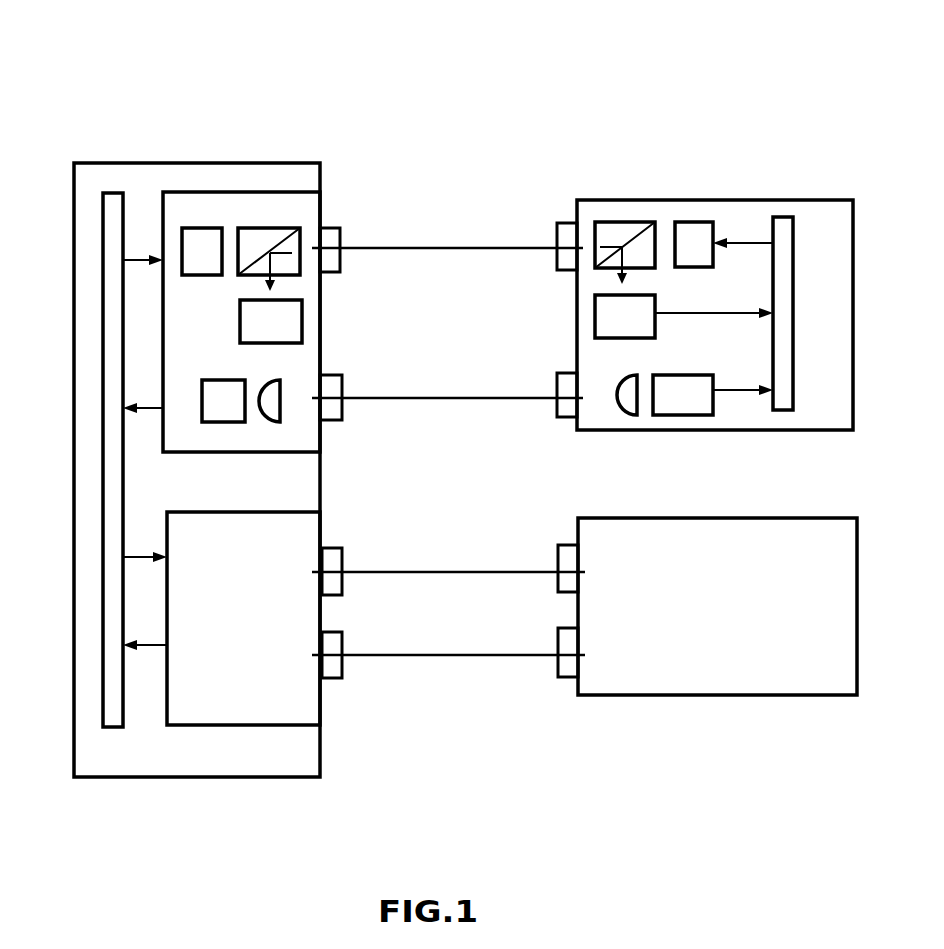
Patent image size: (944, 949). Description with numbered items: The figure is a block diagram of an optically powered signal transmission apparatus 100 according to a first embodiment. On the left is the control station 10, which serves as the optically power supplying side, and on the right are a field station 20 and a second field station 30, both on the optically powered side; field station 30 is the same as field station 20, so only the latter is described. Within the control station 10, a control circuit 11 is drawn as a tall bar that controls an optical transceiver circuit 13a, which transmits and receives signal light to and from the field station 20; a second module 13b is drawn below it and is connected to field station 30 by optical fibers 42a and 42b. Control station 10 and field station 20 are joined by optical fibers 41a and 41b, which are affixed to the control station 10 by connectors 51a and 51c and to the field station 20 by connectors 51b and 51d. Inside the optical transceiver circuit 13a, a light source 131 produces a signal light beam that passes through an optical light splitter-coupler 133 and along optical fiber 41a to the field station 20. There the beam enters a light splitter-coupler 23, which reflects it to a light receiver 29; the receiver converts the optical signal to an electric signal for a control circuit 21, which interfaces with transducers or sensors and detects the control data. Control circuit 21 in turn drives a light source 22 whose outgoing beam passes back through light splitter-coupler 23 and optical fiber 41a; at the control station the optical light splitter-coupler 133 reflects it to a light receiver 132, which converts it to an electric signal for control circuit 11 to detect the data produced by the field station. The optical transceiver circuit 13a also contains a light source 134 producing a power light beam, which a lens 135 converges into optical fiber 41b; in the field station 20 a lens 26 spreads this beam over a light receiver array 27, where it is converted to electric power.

The optically powered signal transmission apparatus 100 is at (498, 72).
The control station 10 is at (162, 163).
The control circuit 11 is at (112, 193).
The optical transceiver circuit 13a is at (185, 192).
The second module 13b is at (205, 727).
The light source 131 is at (210, 228).
The light receiver 132 is at (302, 318).
The optical light splitter-coupler 133 is at (290, 228).
The light source 134 is at (218, 422).
The lens 135 is at (272, 422).
The field station 20 is at (603, 200).
The control circuit 21 is at (780, 217).
The light source 22 is at (692, 222).
The light splitter-coupler 23 is at (633, 222).
The lens 26 is at (622, 415).
The light receiver array 27 is at (698, 415).
The light receiver 29 is at (655, 333).
The field station 30 is at (708, 518).
The optical fiber 41a is at (425, 245).
The optical fiber 41b is at (428, 395).
The optical fiber 42a is at (425, 570).
The optical fiber 42b is at (425, 652).
The connector 51a is at (340, 265).
The connector 51b is at (556, 262).
The connector 51c is at (342, 410).
The connector 51d is at (556, 408).